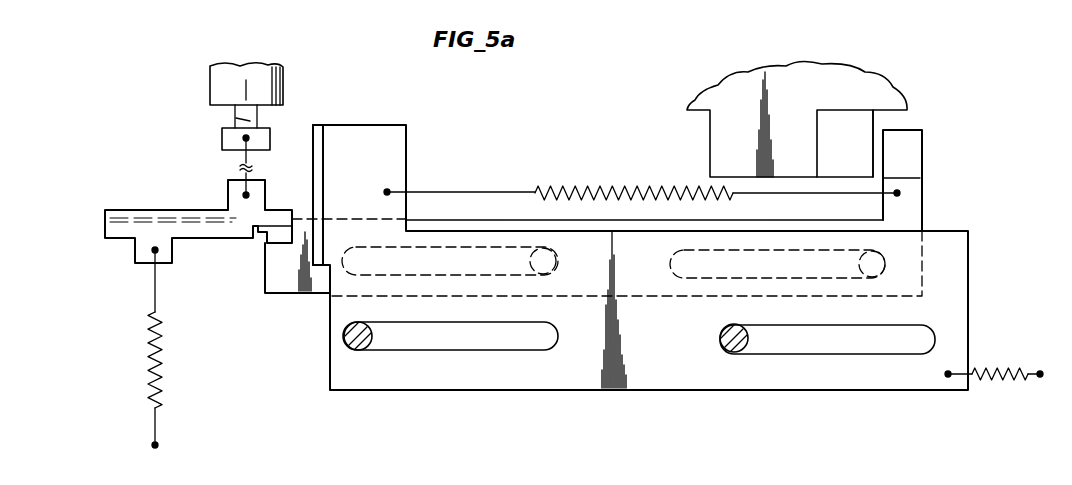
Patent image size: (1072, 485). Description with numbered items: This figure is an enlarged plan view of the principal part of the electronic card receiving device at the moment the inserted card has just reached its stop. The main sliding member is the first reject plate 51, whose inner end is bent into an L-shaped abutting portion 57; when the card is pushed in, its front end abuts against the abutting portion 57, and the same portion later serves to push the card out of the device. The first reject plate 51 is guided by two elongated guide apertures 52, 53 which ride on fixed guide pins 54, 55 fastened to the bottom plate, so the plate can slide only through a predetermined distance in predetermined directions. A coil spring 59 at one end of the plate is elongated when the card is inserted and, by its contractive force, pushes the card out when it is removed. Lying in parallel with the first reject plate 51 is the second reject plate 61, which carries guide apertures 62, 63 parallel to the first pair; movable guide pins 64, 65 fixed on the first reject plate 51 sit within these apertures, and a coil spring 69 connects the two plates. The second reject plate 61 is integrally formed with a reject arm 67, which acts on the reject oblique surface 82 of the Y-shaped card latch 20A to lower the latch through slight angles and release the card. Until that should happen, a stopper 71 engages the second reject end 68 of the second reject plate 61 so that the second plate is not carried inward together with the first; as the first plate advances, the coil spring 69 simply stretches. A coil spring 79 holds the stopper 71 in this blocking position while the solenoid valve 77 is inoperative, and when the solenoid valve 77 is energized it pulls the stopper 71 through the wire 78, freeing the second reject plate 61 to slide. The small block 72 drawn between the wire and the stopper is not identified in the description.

The card latch 20A is at (724, 97).
The first reject plate 51 is at (648, 372).
The elongated guide aperture 52 is at (440, 342).
The elongated guide aperture 53 is at (808, 346).
The fixed guide pin 54 is at (358, 346).
The fixed guide pin 55 is at (735, 352).
The abutting portion 57 is at (315, 128).
The coil spring 59 is at (1012, 382).
The second reject plate 61 is at (477, 228).
The guide aperture 62 is at (494, 272).
The guide aperture 63 is at (708, 270).
The movable guide pin 64 is at (548, 272).
The movable guide pin 65 is at (872, 276).
The reject arm 67 is at (905, 153).
The second reject end 68 is at (275, 250).
The coil spring 69 is at (598, 188).
The stopper 71 is at (208, 230).
The switch 72 is at (280, 215).
The solenoid valve 77 is at (216, 85).
The wire 78 is at (230, 154).
The coil spring 79 is at (160, 362).
The reject oblique surface 82 is at (848, 135).